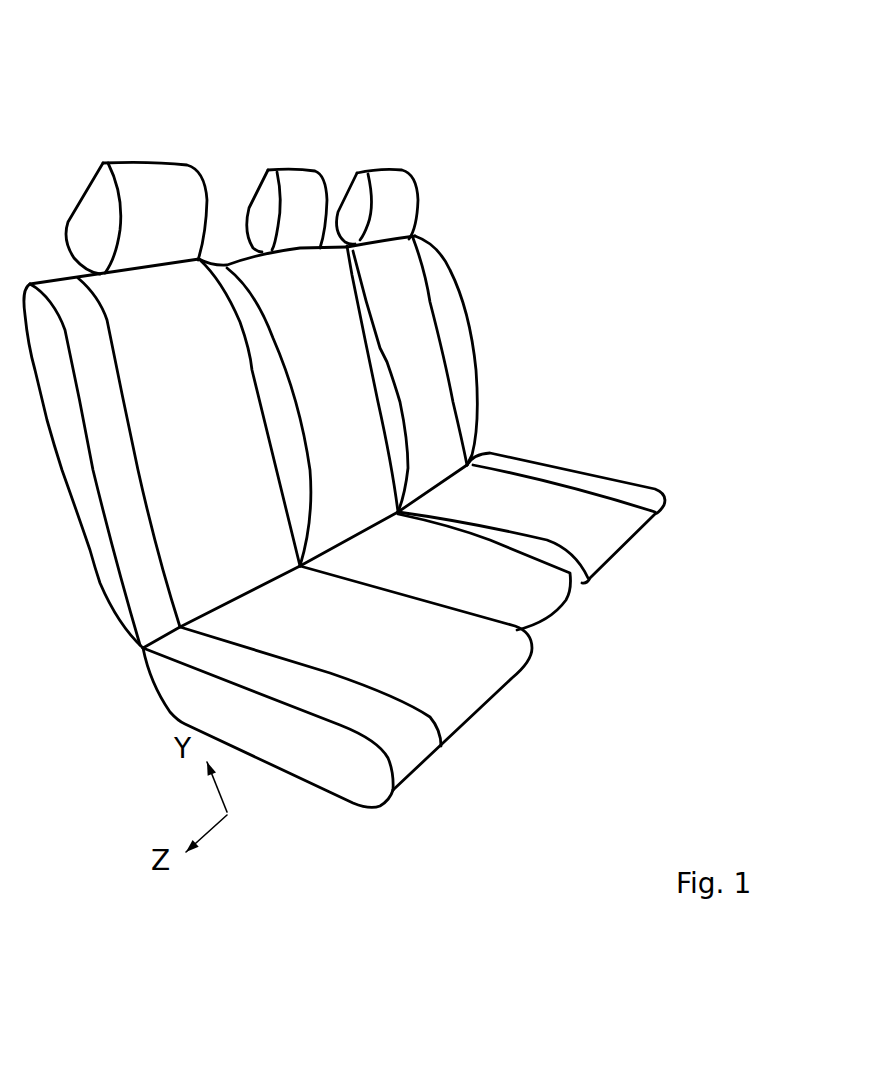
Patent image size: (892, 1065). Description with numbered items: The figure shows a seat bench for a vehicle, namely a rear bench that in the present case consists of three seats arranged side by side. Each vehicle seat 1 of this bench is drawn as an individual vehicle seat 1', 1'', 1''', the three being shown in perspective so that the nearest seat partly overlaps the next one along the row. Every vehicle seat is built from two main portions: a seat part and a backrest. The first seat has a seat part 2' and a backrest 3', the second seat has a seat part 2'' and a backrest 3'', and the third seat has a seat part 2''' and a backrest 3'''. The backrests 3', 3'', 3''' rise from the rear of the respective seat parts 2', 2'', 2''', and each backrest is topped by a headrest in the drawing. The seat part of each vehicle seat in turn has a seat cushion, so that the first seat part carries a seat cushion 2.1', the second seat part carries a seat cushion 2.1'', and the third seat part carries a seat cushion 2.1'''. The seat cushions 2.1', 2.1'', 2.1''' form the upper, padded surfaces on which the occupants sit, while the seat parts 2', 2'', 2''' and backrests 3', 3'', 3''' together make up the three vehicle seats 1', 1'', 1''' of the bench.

The vehicle seat 1 is at (391, 457).
The vehicle seat 1' is at (550, 325).
The vehicle seat 1'' is at (471, 409).
The vehicle seat 1''' is at (337, 473).
The seat part 2' is at (580, 477).
The seat part 2'' is at (570, 621).
The seat part 2''' is at (397, 735).
The seat cushion 2.1' is at (531, 477).
The seat cushion 2.1'' is at (560, 583).
The seat cushion 2.1''' is at (397, 686).
The backrest 3' is at (439, 349).
The backrest 3'' is at (298, 343).
The backrest 3''' is at (167, 359).